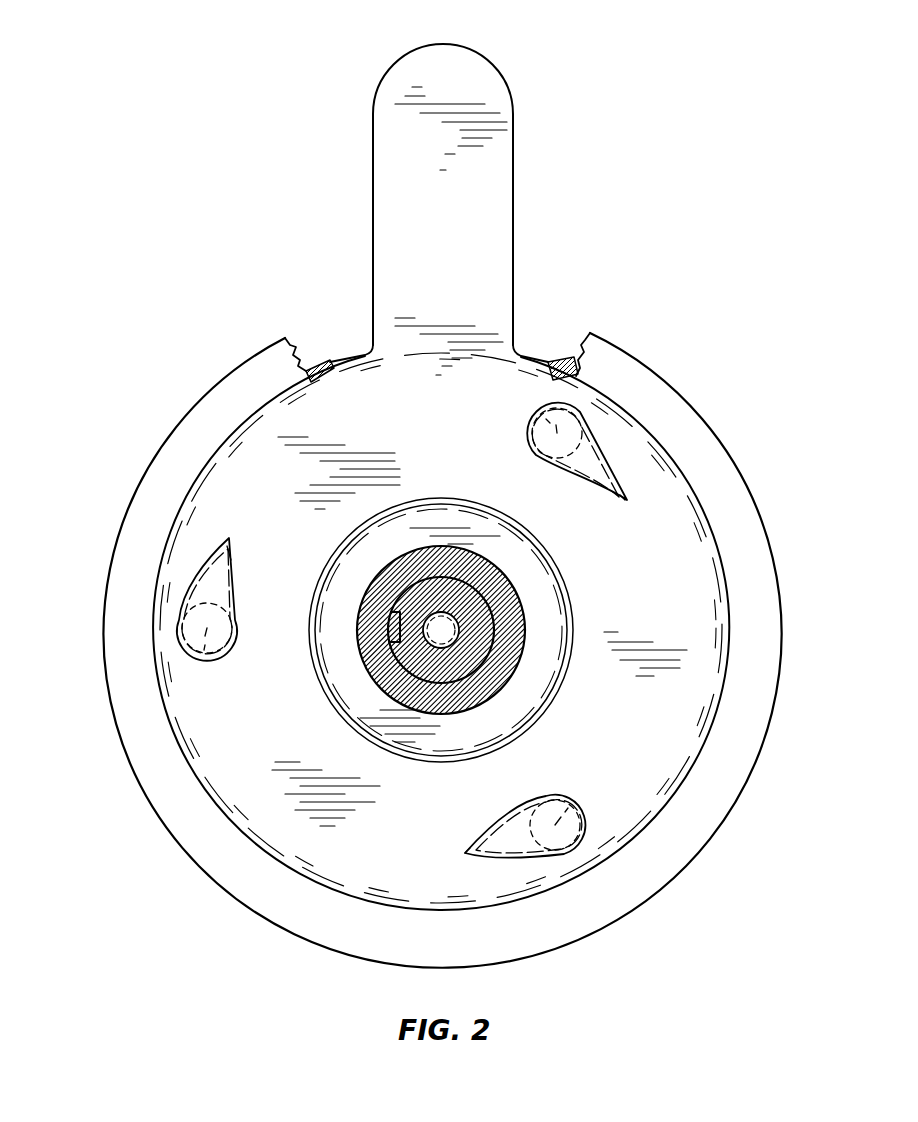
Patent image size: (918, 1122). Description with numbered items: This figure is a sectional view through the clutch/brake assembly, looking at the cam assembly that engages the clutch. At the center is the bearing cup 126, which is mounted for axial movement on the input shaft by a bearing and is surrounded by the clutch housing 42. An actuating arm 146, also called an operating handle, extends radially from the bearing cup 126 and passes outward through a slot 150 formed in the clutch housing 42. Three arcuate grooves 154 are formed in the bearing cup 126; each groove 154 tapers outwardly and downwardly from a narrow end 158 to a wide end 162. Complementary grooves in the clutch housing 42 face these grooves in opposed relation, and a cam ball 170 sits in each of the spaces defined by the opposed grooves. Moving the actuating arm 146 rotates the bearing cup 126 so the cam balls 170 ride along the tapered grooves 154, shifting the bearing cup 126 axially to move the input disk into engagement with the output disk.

The bearing cup 126 is at (680, 553).
The actuating arm 146 is at (400, 182).
The slot 150 is at (348, 358).
The clutch housing 42 is at (311, 368).
The arcuate groove 154 is at (213, 567).
The narrow end 158 is at (237, 592).
The wide end 162 is at (178, 628).
The cam ball 170 is at (205, 640).